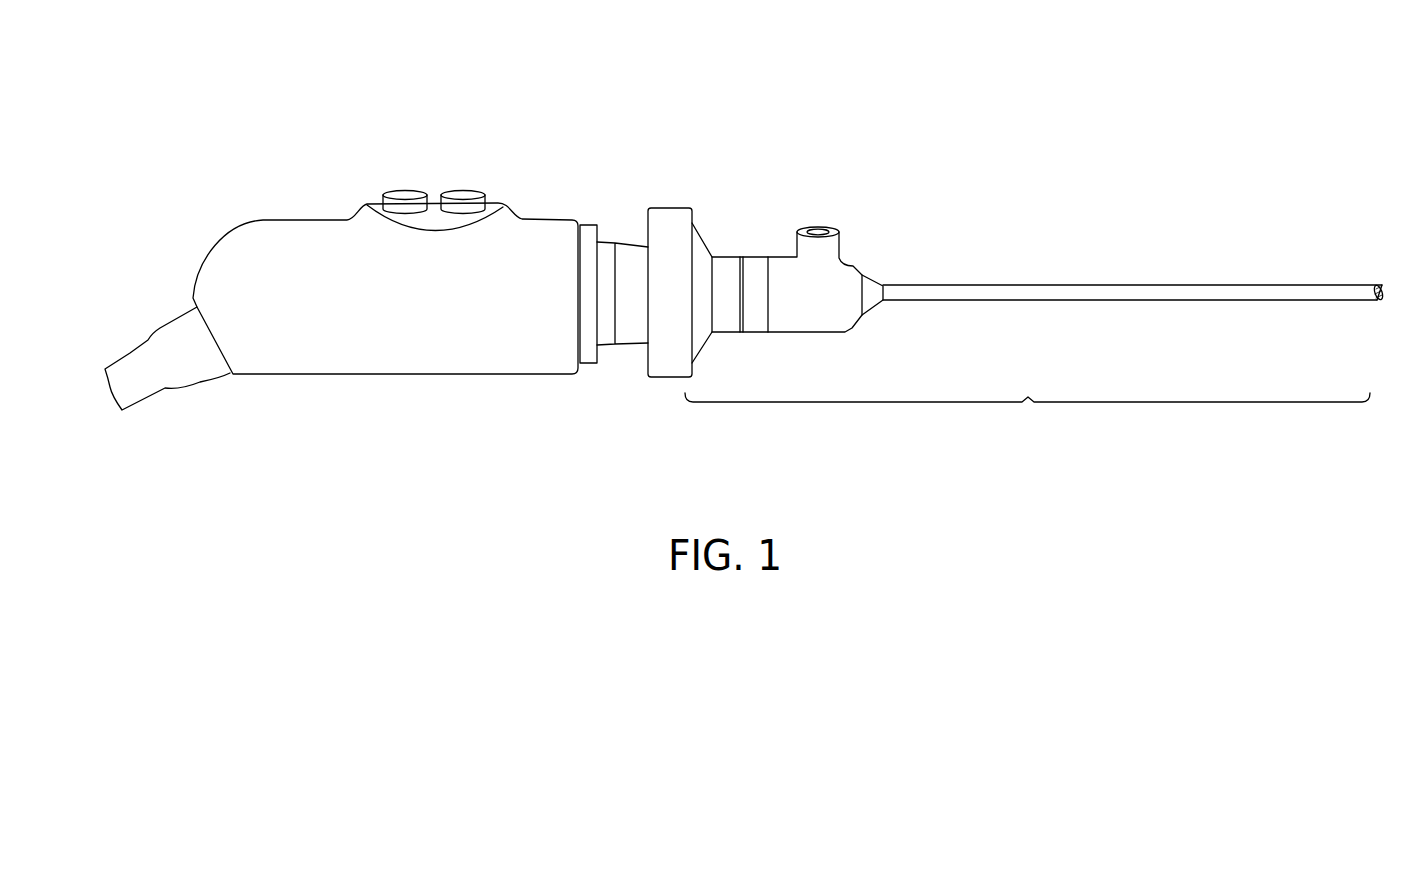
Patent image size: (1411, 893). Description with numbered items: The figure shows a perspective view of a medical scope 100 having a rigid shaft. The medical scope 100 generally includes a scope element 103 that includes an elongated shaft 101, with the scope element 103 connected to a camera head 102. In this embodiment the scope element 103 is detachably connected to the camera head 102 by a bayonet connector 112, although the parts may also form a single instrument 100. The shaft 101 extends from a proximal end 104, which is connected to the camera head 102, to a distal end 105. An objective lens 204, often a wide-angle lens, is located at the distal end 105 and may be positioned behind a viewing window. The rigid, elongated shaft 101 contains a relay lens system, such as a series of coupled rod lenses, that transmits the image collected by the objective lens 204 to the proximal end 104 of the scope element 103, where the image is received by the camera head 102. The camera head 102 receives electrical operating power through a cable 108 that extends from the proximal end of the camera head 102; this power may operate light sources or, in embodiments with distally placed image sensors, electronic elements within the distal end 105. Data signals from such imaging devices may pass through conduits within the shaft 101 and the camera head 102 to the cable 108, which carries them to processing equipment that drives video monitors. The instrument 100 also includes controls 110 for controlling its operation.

The medical scope 100 is at (640, 110).
The elongated shaft 101 is at (1012, 283).
The camera head 102 is at (550, 227).
The scope element 103 is at (1027, 412).
The proximal end 104 is at (722, 193).
The distal end 105 is at (1348, 266).
The cable 108 is at (130, 353).
The controls 110 is at (390, 191).
The bayonet connector 112 is at (654, 196).
The objective lens 204 is at (1384, 308).